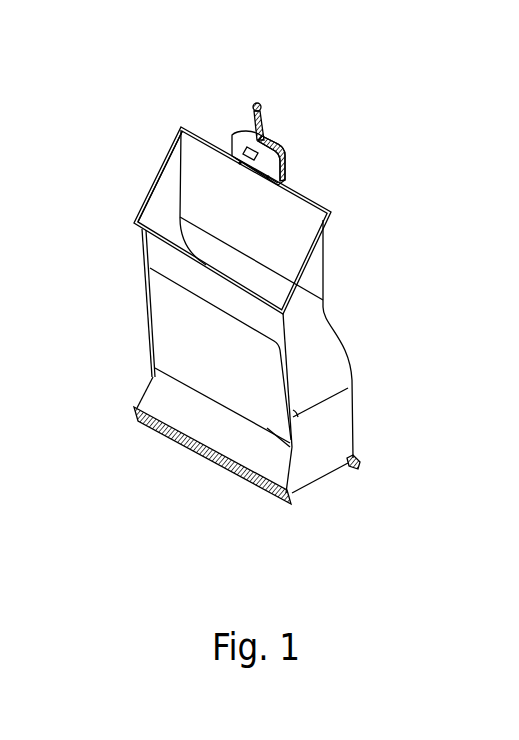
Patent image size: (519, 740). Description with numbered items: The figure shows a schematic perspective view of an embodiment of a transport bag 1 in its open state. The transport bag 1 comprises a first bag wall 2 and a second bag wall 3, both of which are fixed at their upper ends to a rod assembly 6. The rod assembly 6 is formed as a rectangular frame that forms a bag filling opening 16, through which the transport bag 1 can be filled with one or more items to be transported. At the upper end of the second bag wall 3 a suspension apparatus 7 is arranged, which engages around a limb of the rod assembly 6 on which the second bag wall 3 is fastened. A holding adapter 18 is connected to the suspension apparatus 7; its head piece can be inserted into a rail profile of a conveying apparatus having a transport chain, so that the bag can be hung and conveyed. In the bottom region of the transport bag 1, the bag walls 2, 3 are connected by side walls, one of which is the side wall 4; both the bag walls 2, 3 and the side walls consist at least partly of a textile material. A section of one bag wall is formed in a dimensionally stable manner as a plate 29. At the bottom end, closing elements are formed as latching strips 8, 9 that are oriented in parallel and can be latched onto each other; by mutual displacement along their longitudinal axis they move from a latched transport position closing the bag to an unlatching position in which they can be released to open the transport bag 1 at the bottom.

The transport bag 1 is at (421, 272).
The first bag wall 2 is at (152, 253).
The second bag wall 3 is at (328, 363).
The side wall 4 is at (332, 430).
The rod assembly 6 is at (317, 257).
The suspension apparatus 7 is at (283, 167).
The latching strip 8 is at (280, 499).
The latching strip 9 is at (358, 464).
The bag filling opening 16 is at (150, 197).
The holding adapter 18 is at (262, 122).
The plate 29 is at (173, 338).